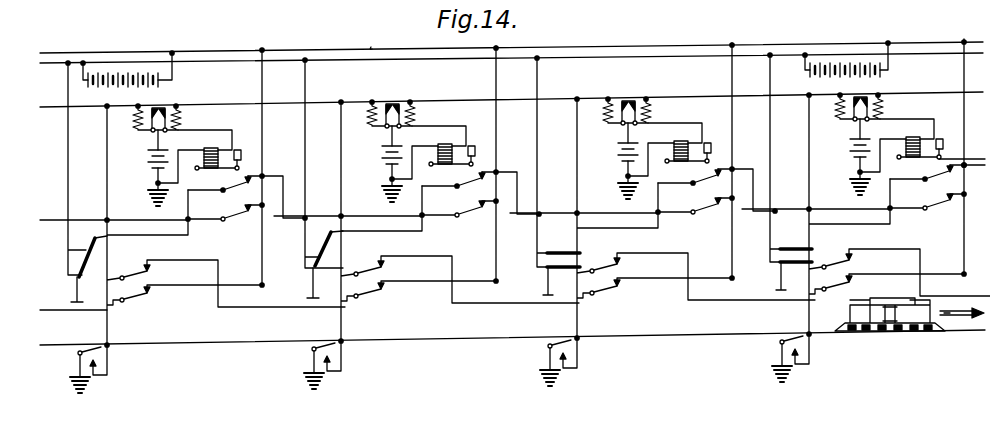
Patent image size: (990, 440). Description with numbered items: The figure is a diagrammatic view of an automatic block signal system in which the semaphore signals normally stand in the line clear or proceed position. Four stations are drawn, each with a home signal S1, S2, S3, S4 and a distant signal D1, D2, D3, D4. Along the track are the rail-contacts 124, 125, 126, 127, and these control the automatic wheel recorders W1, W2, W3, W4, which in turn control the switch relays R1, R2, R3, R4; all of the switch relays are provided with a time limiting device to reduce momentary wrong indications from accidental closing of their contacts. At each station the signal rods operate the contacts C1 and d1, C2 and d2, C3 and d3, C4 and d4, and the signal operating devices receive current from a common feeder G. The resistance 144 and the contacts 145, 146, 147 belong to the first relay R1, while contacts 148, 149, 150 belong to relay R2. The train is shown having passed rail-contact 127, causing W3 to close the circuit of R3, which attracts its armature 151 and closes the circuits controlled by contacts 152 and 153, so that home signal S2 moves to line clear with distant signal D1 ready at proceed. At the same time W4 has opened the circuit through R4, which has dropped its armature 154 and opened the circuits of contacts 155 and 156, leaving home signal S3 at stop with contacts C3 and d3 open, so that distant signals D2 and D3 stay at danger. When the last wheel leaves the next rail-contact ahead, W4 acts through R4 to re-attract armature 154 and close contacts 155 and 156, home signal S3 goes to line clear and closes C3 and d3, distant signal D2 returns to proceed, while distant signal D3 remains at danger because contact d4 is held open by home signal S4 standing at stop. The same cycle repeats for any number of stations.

The rail-contact 124 is at (100, 356).
The rail-contact 125 is at (340, 366).
The rail-contact 126 is at (576, 363).
The rail-contact 127 is at (809, 359).
The resistance 144 is at (240, 148).
The relay contact 145 is at (221, 177).
The relay contact 146 is at (226, 199).
The relay contact 147 is at (226, 226).
The relay contact 148 is at (447, 174).
The relay contact 149 is at (453, 190).
The relay contact 150 is at (453, 219).
The armature 151 is at (683, 171).
The contact 152 is at (689, 187).
The contact 153 is at (689, 216).
The armature 154 is at (915, 167).
The contact 155 is at (921, 183).
The contact 156 is at (921, 212).
The automatic wheel recorder W1 is at (157, 111).
The automatic wheel recorder W2 is at (391, 107).
The automatic wheel recorder W3 is at (627, 104).
The automatic wheel recorder W4 is at (859, 100).
The switch relay R1 is at (207, 149).
The switch relay R2 is at (441, 145).
The switch relay R3 is at (677, 142).
The switch relay R4 is at (909, 138).
The home signal S1 is at (75, 247).
The home signal S2 is at (324, 164).
The home signal S3 is at (558, 162).
The home signal S4 is at (791, 158).
The distant signal D1 is at (86, 282).
The distant signal D2 is at (321, 283).
The distant signal D3 is at (557, 281).
The distant signal D4 is at (790, 276).
The contact C1 is at (135, 274).
The contact C2 is at (369, 270).
The contact C3 is at (605, 267).
The contact C4 is at (837, 263).
The contact d1 is at (133, 305).
The contact d2 is at (367, 301).
The contact d3 is at (603, 298).
The contact d4 is at (835, 294).
The common feeder G is at (368, 42).